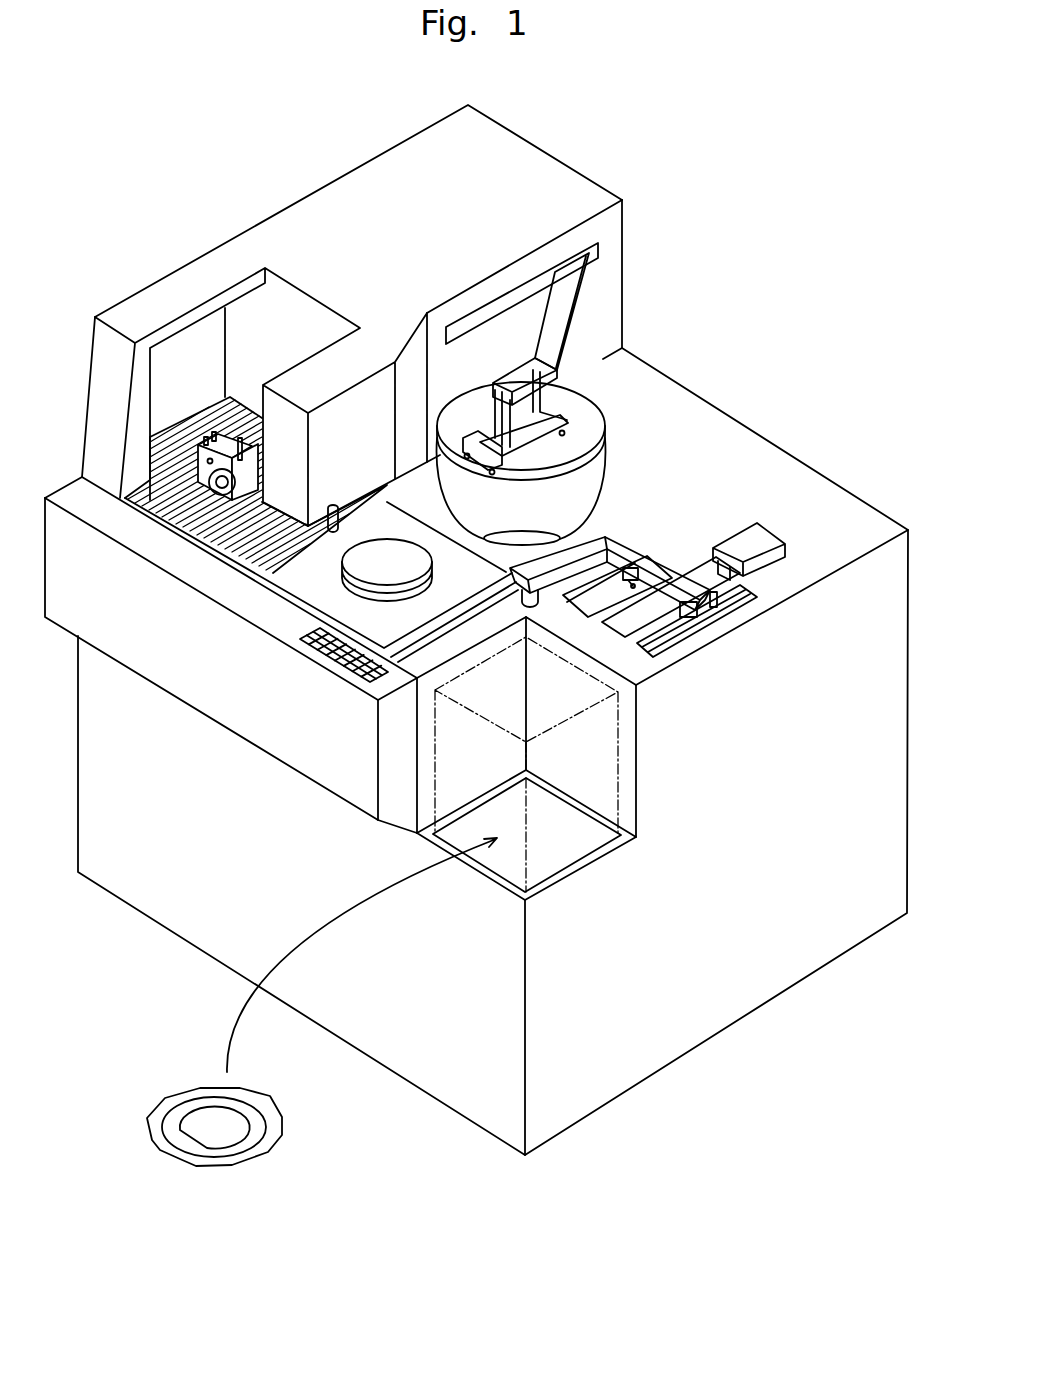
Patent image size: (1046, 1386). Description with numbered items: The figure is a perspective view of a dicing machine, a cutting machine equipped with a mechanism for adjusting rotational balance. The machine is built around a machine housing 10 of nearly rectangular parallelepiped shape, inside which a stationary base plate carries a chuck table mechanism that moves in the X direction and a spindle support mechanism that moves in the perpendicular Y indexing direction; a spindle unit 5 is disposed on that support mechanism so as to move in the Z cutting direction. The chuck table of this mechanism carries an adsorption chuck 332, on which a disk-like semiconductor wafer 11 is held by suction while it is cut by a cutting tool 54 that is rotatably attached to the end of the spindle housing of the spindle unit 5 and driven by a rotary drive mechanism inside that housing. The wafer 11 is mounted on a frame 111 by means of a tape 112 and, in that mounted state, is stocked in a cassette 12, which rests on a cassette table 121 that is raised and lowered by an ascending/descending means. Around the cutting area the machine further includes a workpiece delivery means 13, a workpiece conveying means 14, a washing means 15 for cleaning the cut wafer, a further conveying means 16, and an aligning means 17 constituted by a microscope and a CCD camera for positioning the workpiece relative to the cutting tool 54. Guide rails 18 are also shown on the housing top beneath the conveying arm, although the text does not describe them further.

The spindle unit 5 is at (237, 423).
The machine housing 10 is at (721, 411).
The semiconductor wafer 11 is at (200, 1118).
The cassette 12 is at (617, 743).
The workpiece delivery means 13 is at (762, 535).
The workpiece conveying means 14 is at (622, 538).
The washing means 15 is at (582, 487).
The conveying means 16 is at (568, 297).
The aligning means 17 is at (387, 502).
The guide rails 18 is at (660, 640).
The cutting tool 54 is at (172, 518).
The frame 111 is at (238, 1162).
The tape 112 is at (183, 1145).
The cassette table 121 is at (508, 862).
The adsorption chuck 332 is at (365, 570).